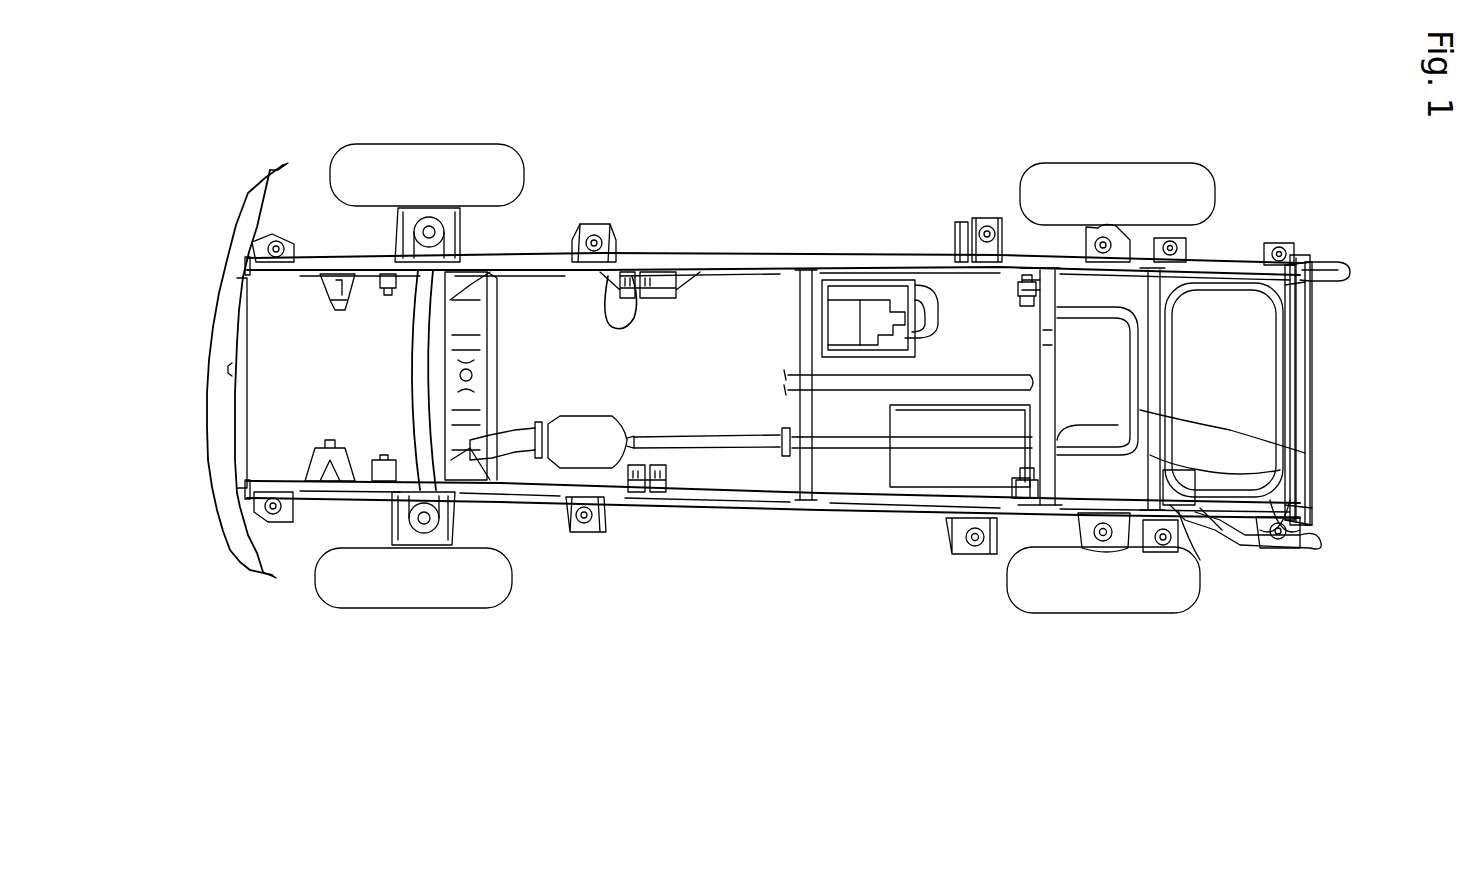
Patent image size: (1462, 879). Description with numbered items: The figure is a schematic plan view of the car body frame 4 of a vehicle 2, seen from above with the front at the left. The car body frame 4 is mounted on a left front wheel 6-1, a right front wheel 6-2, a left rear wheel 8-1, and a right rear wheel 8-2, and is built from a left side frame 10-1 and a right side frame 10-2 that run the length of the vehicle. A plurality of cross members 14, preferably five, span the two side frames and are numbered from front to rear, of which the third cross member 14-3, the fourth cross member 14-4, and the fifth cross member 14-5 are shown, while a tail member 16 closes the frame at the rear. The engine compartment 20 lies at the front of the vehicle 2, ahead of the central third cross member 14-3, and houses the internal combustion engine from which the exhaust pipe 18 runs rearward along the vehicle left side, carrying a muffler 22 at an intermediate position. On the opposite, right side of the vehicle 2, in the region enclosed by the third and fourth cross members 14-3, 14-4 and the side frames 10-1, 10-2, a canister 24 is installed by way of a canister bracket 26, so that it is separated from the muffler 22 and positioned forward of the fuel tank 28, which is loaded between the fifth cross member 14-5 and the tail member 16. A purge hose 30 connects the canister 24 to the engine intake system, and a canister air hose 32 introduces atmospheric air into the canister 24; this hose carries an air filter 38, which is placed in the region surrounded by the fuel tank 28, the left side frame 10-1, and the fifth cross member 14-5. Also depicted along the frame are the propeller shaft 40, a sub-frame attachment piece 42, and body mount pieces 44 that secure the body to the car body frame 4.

The vehicle 2 is at (1183, 143).
The car body frame 4 is at (730, 250).
The left front wheel 6-1 is at (432, 585).
The right front wheel 6-2 is at (403, 158).
The left rear wheel 8-1 is at (1104, 595).
The right rear wheel 8-2 is at (1101, 185).
The left side frame 10-1 is at (615, 495).
The right side frame 10-2 is at (683, 263).
The cross members 14 is at (789, 468).
The third cross member 14-3 is at (800, 300).
The fourth cross member 14-4 is at (1043, 333).
The fifth cross member 14-5 is at (1160, 307).
The tail member 16 is at (1308, 321).
The exhaust pipe 18 is at (868, 453).
The engine compartment 20 is at (279, 334).
The muffler 22 is at (922, 470).
The canister 24 is at (850, 325).
The canister bracket 26 is at (877, 300).
The fuel tank 28 is at (1240, 385).
The purge hose 30 is at (910, 300).
The canister air hose 32 is at (1143, 410).
The air filter 38 is at (1183, 520).
The propeller shaft 40 is at (848, 377).
The sub-frame attachment piece 42 is at (615, 278).
The body mount piece 44 is at (272, 238).